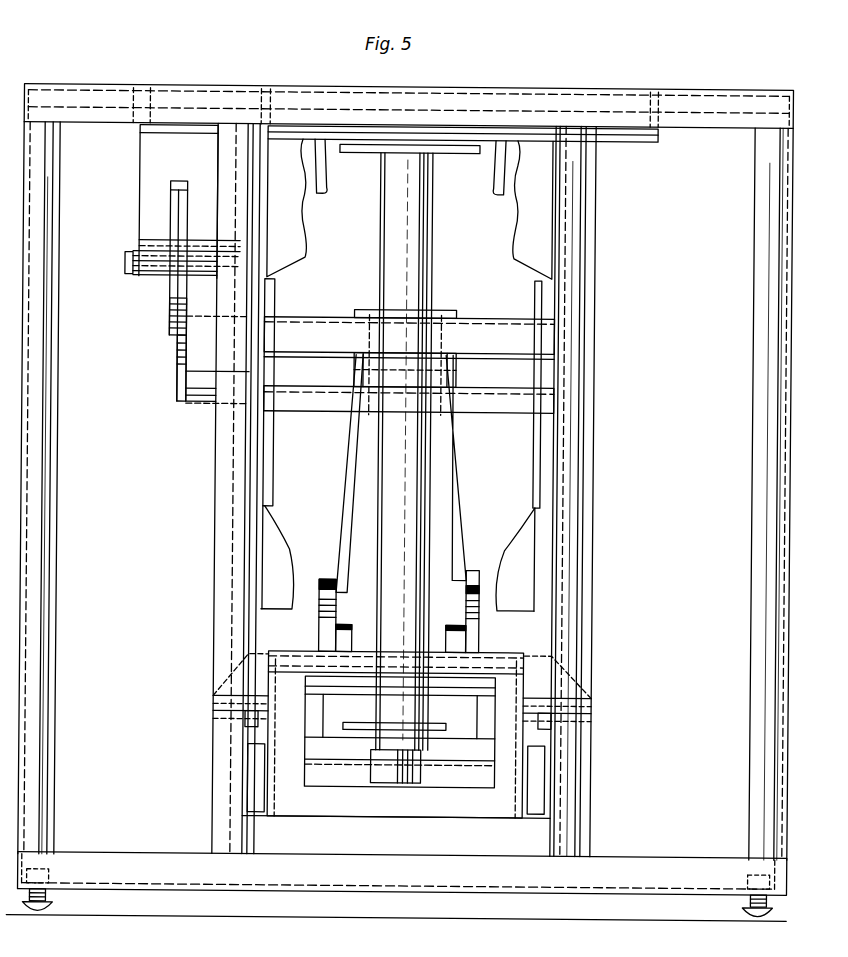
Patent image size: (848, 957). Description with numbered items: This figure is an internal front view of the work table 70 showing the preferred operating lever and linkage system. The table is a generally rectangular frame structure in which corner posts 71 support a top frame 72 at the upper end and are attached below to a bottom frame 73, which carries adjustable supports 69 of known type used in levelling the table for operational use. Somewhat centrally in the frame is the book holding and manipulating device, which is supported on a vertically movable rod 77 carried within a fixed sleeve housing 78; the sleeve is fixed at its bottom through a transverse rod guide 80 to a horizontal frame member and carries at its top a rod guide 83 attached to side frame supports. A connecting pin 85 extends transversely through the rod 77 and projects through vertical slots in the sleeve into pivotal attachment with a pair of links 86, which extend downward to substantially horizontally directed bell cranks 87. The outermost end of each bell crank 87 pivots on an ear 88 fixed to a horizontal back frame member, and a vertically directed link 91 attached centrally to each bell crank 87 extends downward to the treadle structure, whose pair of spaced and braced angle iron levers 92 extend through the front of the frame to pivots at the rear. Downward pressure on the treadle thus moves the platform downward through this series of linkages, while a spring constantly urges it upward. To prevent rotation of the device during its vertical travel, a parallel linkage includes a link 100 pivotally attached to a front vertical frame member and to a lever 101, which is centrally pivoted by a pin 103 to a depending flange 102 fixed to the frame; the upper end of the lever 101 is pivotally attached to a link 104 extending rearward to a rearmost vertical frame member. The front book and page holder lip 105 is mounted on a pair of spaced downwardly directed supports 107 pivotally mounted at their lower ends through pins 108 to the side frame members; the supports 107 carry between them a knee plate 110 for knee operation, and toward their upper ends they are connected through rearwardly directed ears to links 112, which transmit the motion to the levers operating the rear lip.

The adjustable supports 69 is at (56, 905).
The work table 70 is at (690, 63).
The corner posts 71 is at (768, 496).
The top frame 72 is at (101, 102).
The bottom frame 73 is at (155, 862).
The rod 77 is at (413, 786).
The housing 78 is at (432, 492).
The transverse rod guide 80 is at (447, 725).
The rod guide 83 is at (450, 312).
The connecting pin 85 is at (456, 368).
The links 86 is at (352, 432).
The bell cranks 87 is at (327, 578).
The ear 88 is at (447, 638).
The link 91 is at (320, 628).
The angle iron levers 92 is at (350, 755).
The link 100 is at (177, 363).
The lever 101 is at (170, 304).
The depending flange 102 is at (131, 205).
The pin 103 is at (124, 264).
The link 104 is at (188, 191).
The lip 105 is at (514, 96).
The supports 107 is at (553, 443).
The pins 108 is at (247, 722).
The knee plate 110 is at (299, 240).
The links 112 is at (272, 453).